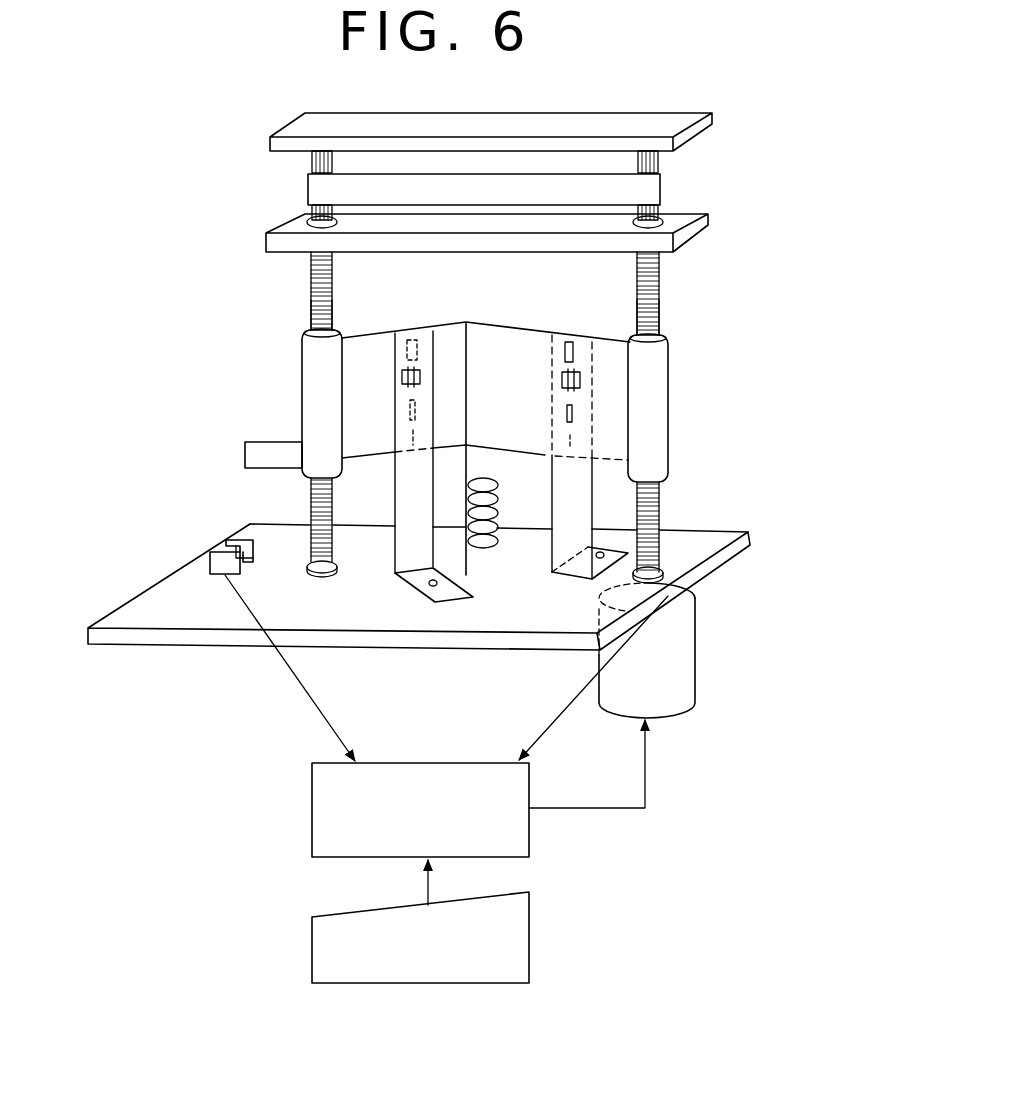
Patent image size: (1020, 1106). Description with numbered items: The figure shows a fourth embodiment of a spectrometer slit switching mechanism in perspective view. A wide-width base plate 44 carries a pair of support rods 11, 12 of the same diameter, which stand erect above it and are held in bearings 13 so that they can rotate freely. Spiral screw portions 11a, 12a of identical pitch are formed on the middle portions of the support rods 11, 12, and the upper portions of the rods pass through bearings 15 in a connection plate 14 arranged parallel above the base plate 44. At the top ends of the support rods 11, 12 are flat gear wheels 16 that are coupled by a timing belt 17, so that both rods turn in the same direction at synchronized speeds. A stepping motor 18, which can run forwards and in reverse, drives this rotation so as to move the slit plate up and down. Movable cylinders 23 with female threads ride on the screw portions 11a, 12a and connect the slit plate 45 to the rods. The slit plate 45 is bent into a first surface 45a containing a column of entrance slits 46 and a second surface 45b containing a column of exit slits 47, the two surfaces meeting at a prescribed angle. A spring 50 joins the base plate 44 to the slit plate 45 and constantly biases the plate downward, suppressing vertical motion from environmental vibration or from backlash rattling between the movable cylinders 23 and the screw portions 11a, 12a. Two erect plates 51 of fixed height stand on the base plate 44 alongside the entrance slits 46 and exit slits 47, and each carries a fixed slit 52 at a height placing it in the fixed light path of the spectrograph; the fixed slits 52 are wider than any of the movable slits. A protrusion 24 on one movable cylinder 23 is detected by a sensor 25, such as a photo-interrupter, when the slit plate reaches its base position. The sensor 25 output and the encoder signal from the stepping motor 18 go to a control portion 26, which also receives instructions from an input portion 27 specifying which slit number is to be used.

The support rod 11 is at (664, 292).
The screw portion 11a is at (662, 318).
The support rod 12 is at (298, 276).
The screw portion 12a is at (310, 312).
The bearing 13 is at (323, 578).
The connection plate 14 is at (697, 228).
The bearing 15 is at (310, 218).
The flat gear wheel 16 is at (310, 166).
The timing belt 17 is at (597, 190).
The stepping motor 18 is at (683, 687).
The movable cylinder 23 is at (312, 395).
The protrusion 24 is at (257, 455).
The sensor 25 is at (215, 548).
The control portion 26 is at (529, 838).
The input portion 27 is at (529, 945).
The base plate 44 is at (184, 637).
The slit plate 45 is at (499, 318).
The first surface 45a is at (372, 445).
The second surface 45b is at (522, 430).
The entrance slit 46 is at (410, 337).
The exit slit 47 is at (572, 343).
The spring 50 is at (498, 523).
The erect plate 51 is at (457, 600).
The fixed slit 52 is at (425, 377).